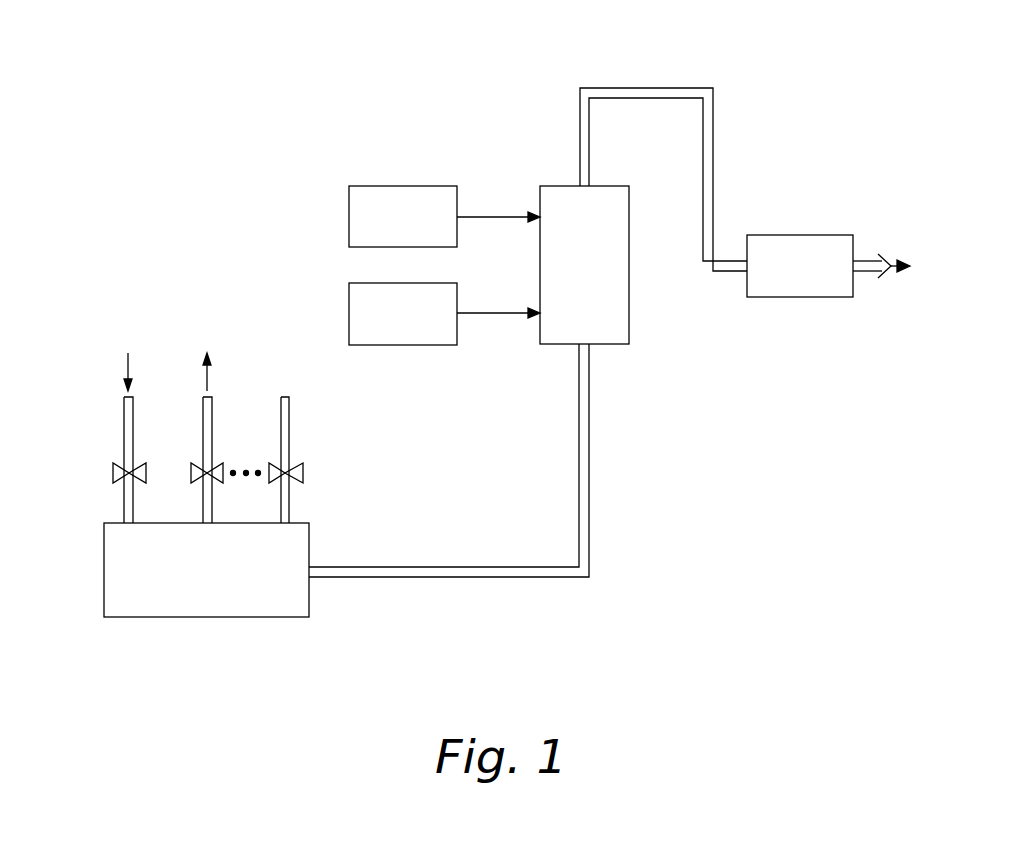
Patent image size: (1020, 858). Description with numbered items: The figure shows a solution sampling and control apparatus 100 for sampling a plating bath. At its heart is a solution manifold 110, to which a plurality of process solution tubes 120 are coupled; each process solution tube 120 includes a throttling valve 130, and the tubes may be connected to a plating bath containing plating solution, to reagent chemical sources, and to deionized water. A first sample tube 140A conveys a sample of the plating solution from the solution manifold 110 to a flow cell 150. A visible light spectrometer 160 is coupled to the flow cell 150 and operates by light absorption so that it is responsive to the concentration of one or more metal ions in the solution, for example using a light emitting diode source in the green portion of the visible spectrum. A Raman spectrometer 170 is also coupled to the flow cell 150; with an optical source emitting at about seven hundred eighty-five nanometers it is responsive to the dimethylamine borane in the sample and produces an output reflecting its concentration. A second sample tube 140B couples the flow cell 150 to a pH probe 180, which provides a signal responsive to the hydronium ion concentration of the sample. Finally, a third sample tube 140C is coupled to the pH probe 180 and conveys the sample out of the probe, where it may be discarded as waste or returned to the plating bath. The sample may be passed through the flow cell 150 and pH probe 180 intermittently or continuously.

The solution sampling and control apparatus 100 is at (111, 70).
The solution manifold 110 is at (104, 570).
The process solution tubes 120 is at (124, 430).
The throttling valve 130 is at (113, 475).
The first sample tube 140A is at (591, 505).
The second sample tube 140B is at (657, 86).
The third sample tube 140C is at (876, 276).
The flow cell 150 is at (603, 346).
The visible light spectrometer 160 is at (349, 300).
The Raman spectrometer 170 is at (349, 200).
The pH probe 180 is at (801, 234).